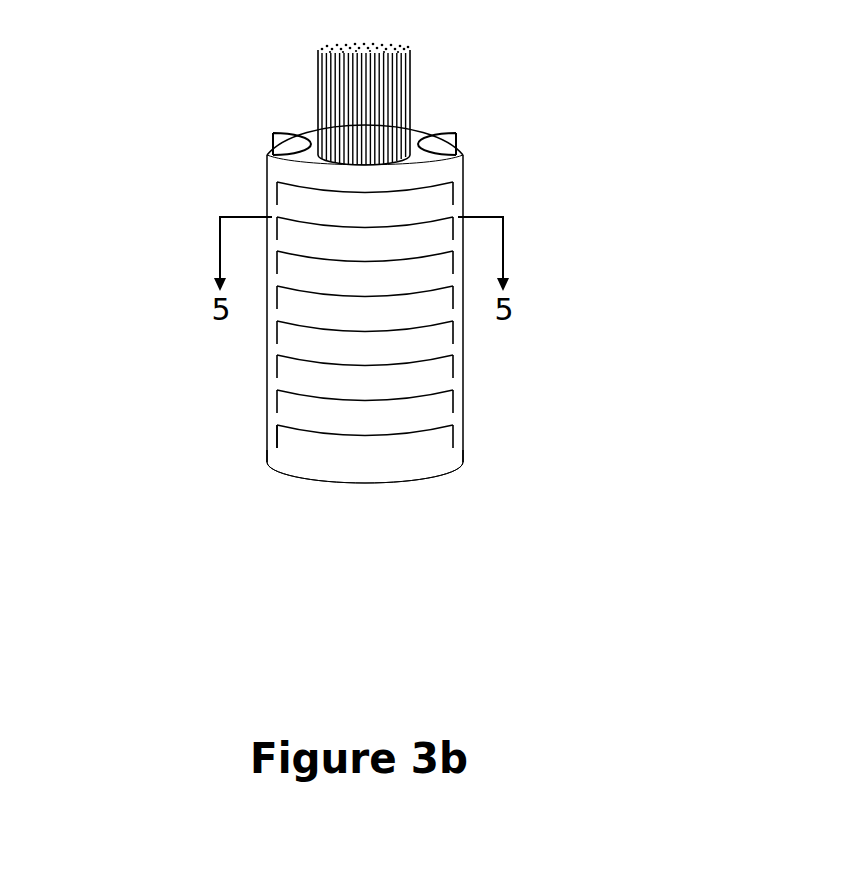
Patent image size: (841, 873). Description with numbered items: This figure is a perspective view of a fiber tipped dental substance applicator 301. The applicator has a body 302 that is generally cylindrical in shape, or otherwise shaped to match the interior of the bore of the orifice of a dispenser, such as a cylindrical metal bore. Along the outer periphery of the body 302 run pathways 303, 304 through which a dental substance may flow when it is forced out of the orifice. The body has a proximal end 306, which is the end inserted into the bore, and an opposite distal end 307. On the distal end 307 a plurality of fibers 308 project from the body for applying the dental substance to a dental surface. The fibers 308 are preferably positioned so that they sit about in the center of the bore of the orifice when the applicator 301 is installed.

The fiber tipped dental substance applicator 301 is at (697, 333).
The body 302 is at (372, 450).
The pathway 303 is at (443, 437).
The pathway 304 is at (277, 438).
The proximal end 306 is at (328, 480).
The distal end 307 is at (425, 130).
The fibers 308 is at (318, 87).